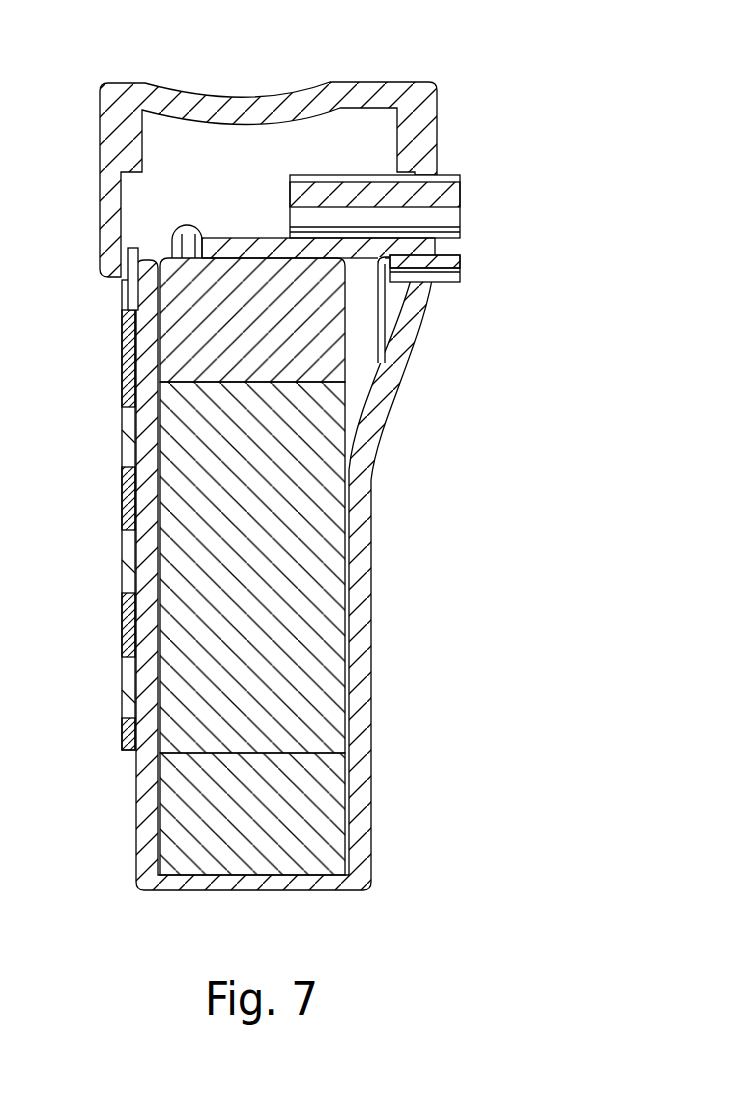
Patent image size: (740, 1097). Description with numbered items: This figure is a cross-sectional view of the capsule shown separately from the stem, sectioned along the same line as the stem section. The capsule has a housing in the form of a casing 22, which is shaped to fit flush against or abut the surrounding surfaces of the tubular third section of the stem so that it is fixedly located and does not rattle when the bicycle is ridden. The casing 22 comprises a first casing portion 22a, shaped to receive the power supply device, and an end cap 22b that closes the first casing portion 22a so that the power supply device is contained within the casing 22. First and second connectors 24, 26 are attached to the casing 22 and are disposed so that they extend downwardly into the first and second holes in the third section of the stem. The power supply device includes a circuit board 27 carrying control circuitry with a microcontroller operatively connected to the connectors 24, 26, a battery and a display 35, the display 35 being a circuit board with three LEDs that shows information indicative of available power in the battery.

The casing 22 is at (313, 542).
The first casing portion 22a is at (370, 403).
The end cap 22b is at (197, 102).
The first connector 24 is at (430, 180).
The second connector 26 is at (460, 262).
The circuit board 27 is at (403, 242).
The display 35 is at (122, 502).